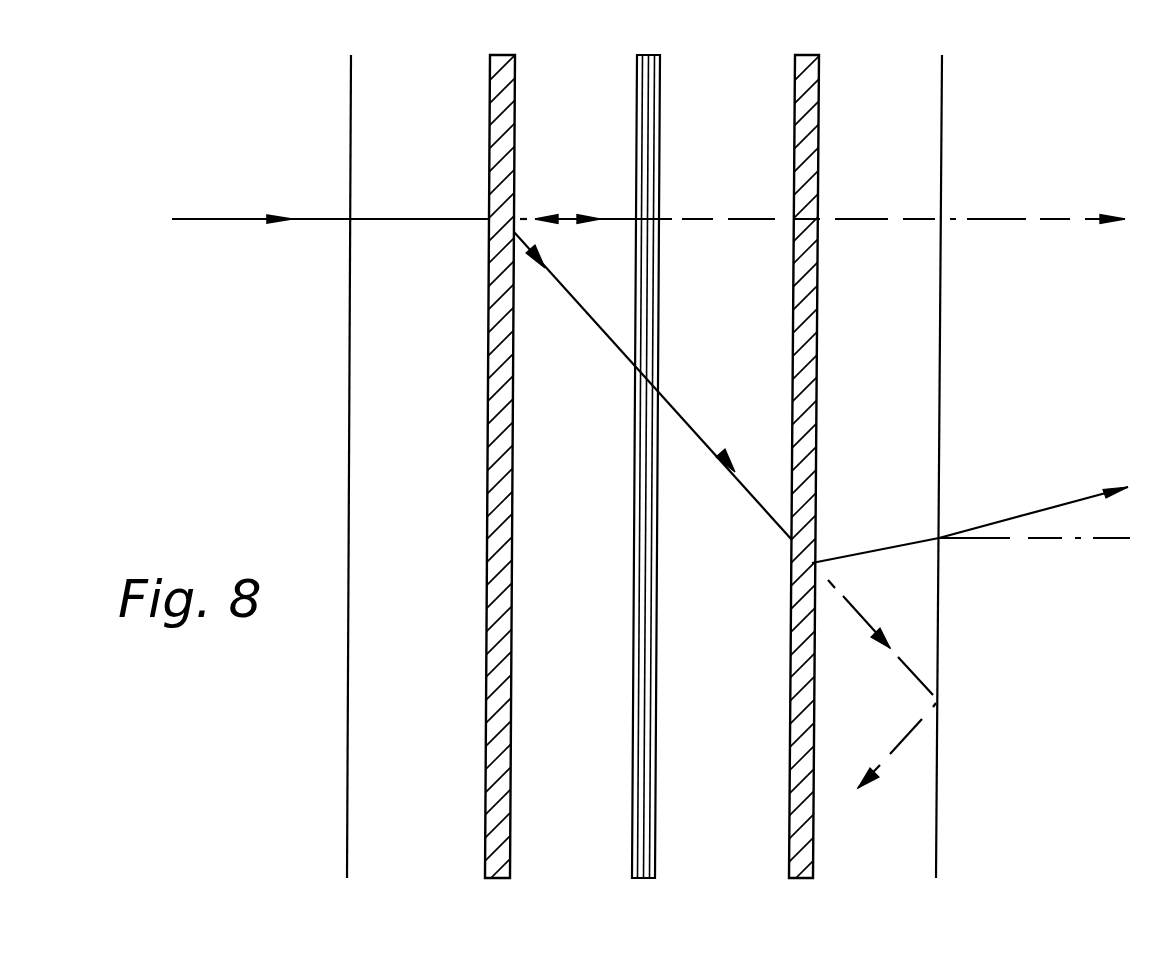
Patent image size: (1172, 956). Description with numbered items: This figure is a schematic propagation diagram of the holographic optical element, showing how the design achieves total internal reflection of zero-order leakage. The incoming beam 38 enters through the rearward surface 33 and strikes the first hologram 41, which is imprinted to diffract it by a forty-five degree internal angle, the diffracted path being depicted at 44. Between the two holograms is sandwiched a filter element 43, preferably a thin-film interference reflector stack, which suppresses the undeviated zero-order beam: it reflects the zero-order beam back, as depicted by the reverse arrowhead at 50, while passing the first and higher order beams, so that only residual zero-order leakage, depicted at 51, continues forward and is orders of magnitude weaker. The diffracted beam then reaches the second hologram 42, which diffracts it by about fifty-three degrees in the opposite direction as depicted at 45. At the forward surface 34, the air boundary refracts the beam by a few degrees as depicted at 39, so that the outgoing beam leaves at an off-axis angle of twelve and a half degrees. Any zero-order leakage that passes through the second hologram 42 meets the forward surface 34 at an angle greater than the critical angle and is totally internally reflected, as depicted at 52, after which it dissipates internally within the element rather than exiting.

The rearward surface 33 is at (350, 102).
The forward surface 34 is at (942, 90).
The first hologram 41 is at (499, 56).
The second hologram 42 is at (804, 56).
The filter element 43 is at (647, 57).
The beam 38 is at (240, 219).
The reflected zero-order beam 50 is at (568, 213).
The residual zero-order leakage 51 is at (1047, 218).
The diffracted beam 44 is at (580, 307).
The second diffracted beam 45 is at (887, 545).
The refracted outgoing beam 39 is at (1068, 500).
The totally internally reflected zero-order leakage 52 is at (898, 742).